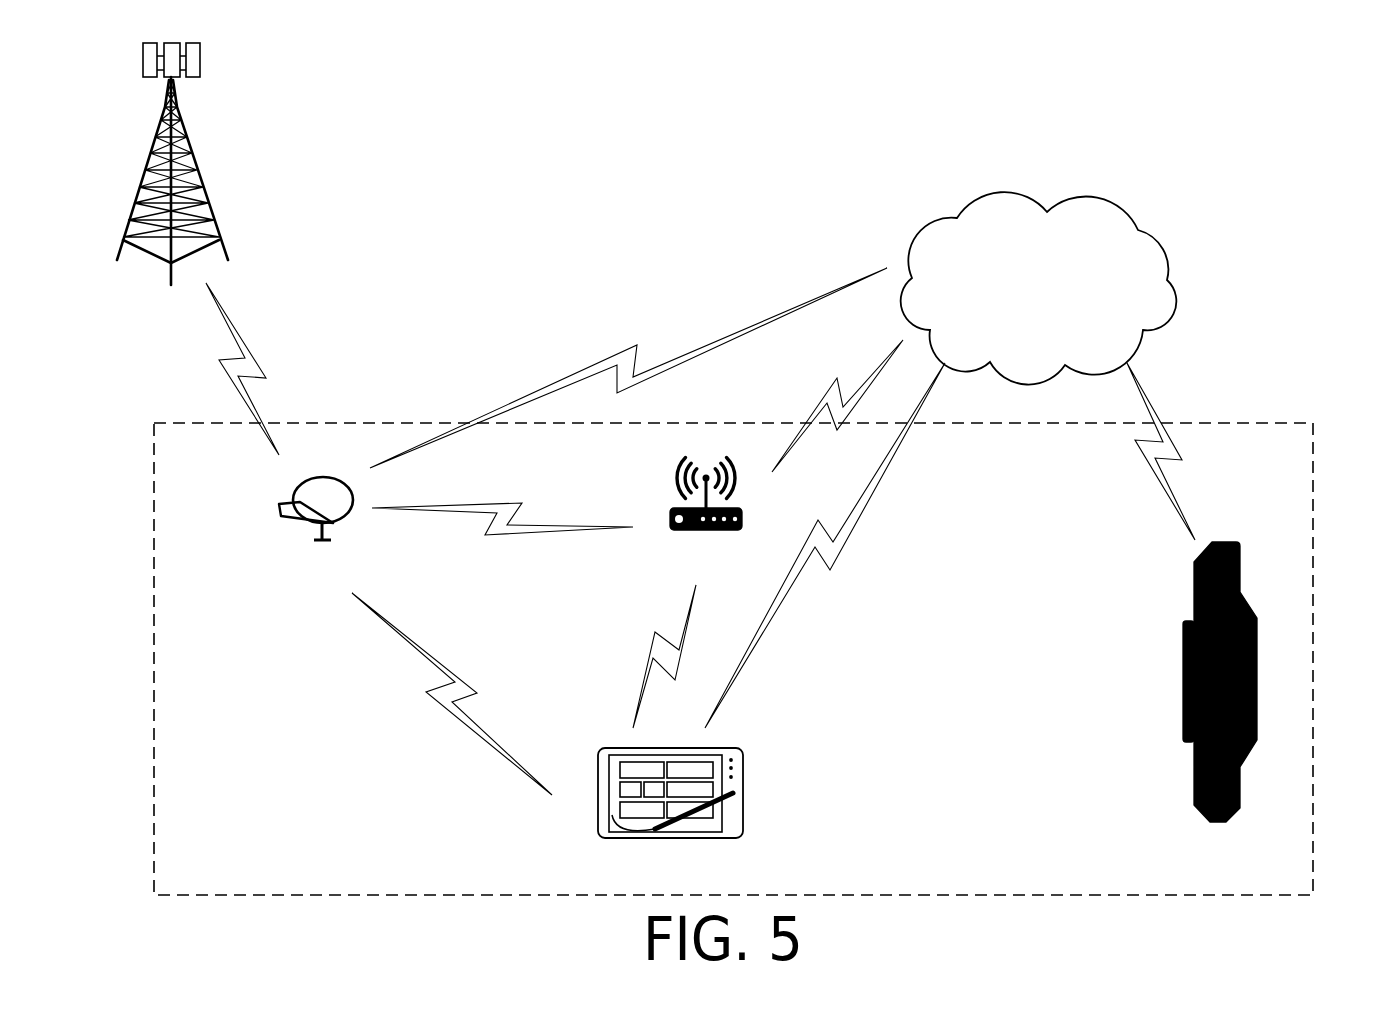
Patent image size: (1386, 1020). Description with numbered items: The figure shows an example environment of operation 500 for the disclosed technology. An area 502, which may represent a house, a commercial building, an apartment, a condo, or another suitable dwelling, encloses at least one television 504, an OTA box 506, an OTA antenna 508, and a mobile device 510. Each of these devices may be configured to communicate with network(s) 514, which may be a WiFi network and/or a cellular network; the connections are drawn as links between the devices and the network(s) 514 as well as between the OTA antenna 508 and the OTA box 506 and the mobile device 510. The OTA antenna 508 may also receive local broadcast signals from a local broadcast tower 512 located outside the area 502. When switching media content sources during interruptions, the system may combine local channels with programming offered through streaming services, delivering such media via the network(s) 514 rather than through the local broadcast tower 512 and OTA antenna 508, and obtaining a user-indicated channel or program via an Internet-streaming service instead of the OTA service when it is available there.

The communication system 500 is at (1236, 152).
The area 502 is at (1258, 460).
The television 504 is at (1210, 871).
The OTA box 506 is at (687, 568).
The OTA antenna 508 is at (335, 563).
The mobile device 510 is at (651, 880).
The local broadcast tower 512 is at (154, 352).
The network(s) 514 is at (1039, 288).